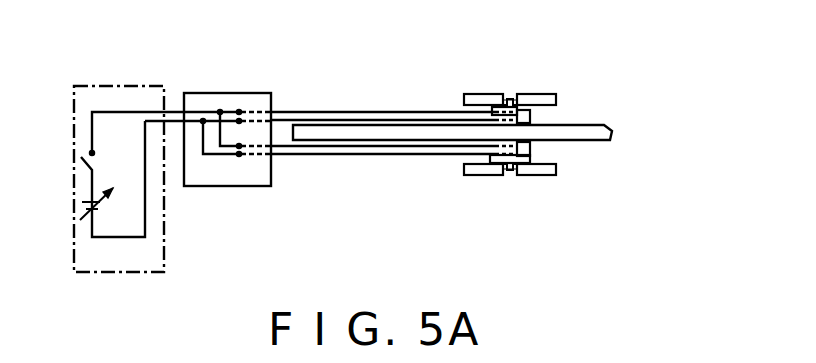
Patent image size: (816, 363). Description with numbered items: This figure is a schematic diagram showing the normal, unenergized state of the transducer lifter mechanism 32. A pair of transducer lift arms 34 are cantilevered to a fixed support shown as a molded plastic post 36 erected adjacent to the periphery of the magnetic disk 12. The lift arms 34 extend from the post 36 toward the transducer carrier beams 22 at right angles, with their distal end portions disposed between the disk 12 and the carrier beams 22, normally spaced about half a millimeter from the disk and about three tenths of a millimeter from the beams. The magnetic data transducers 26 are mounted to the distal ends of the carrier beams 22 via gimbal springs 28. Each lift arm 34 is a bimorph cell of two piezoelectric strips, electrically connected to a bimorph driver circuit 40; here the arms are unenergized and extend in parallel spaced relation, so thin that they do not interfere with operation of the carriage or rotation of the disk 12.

The magnetic disk 12 is at (608, 129).
The transducer carrier beams 22 is at (535, 94).
The magnetic data transducers 26 is at (533, 117).
The gimbal springs 28 is at (461, 105).
The transducer lifter mechanism 32 is at (637, 76).
The transducer lift arms 34 is at (373, 111).
The post 36 is at (228, 93).
The bimorph driver circuit 40 is at (95, 86).